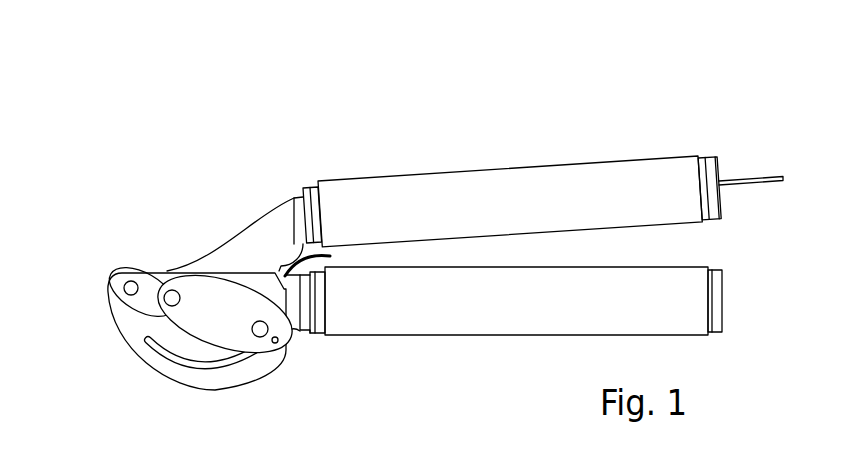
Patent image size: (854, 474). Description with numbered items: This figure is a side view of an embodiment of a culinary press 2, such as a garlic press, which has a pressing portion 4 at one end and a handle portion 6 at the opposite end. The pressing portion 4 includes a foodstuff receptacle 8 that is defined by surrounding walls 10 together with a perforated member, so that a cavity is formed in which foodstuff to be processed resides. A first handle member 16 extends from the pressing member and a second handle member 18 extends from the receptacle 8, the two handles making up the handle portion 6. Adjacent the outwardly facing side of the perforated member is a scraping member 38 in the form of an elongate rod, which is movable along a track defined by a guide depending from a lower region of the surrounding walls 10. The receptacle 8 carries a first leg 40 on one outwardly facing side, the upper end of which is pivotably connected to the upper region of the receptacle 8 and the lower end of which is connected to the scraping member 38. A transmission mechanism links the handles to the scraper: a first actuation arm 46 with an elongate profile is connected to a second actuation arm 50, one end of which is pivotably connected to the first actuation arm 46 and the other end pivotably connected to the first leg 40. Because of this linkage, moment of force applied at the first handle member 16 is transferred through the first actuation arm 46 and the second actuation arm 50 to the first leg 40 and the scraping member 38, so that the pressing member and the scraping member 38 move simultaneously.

The culinary press 2 is at (697, 87).
The pressing portion 4 is at (192, 177).
The handle portion 6 is at (500, 138).
The foodstuff receptacle 8 is at (145, 368).
The surrounding walls 10 is at (123, 318).
The first handle member 16 is at (602, 192).
The second handle member 18 is at (533, 315).
The scraping member 38 is at (277, 344).
The first leg 40 is at (223, 283).
The first actuation arm 46 is at (148, 280).
The second actuation arm 50 is at (217, 317).